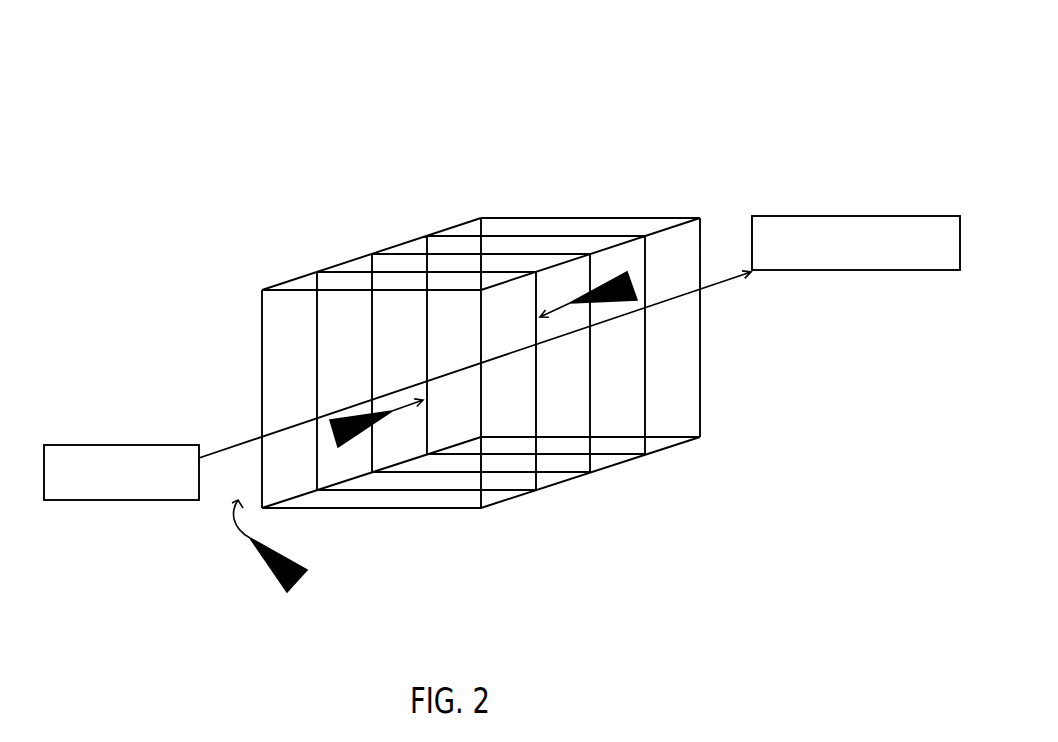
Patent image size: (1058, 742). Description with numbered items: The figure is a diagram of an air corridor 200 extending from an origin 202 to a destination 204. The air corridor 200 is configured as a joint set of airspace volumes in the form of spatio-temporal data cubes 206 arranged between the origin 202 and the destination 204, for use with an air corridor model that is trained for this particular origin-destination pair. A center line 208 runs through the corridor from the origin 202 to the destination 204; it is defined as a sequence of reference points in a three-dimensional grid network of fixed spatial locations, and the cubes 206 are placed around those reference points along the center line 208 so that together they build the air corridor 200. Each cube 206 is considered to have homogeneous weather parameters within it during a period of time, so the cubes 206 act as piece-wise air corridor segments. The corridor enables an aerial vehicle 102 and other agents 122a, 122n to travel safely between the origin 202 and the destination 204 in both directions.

The air corridor 200 is at (906, 113).
The aerial vehicle 102 is at (338, 447).
The other agent 122a is at (633, 287).
The other agent 122n is at (287, 592).
The origin 202 is at (121, 472).
The destination 204 is at (856, 243).
The spatio-temporal data cubes 206 is at (367, 255).
The center line 208 is at (238, 445).